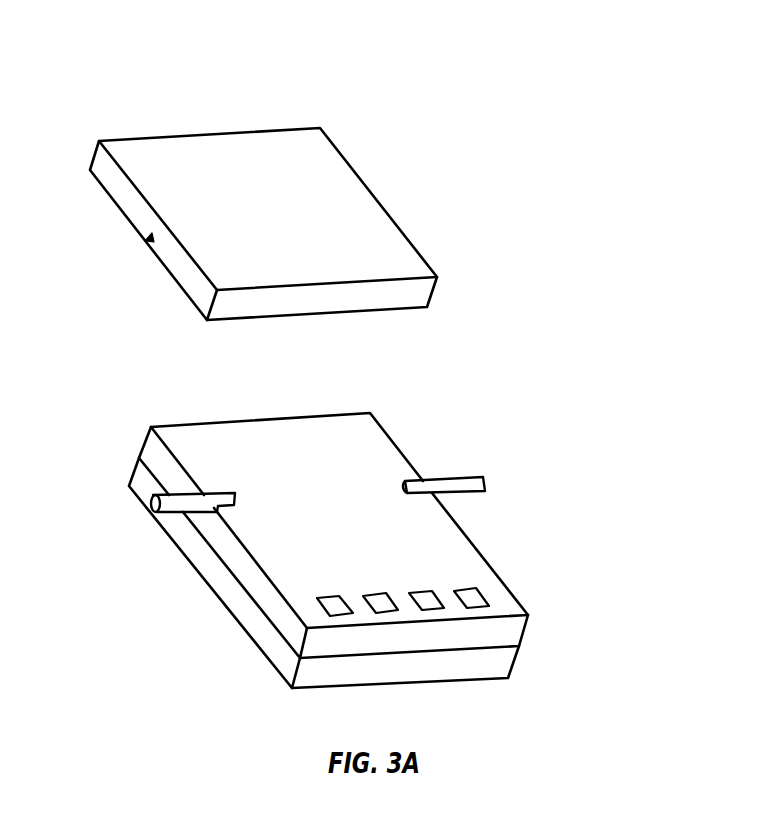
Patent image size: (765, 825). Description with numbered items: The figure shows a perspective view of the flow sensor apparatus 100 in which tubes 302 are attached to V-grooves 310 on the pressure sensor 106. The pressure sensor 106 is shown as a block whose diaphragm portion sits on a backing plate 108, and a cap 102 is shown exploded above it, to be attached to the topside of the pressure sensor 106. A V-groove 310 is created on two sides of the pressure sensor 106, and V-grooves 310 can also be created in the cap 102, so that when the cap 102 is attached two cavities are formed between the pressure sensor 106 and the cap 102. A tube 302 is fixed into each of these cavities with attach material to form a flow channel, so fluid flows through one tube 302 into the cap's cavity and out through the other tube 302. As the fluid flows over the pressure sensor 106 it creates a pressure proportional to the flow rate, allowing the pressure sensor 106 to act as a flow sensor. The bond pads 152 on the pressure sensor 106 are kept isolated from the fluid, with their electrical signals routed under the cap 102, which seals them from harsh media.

The flow sensor apparatus 100 is at (497, 151).
The cap 102 is at (343, 177).
The V-groove 310 is at (150, 237).
The pressure sensor 106 is at (396, 426).
The backing plate 108 is at (477, 667).
The tube 302 is at (462, 487).
The bond pads 152 is at (471, 599).